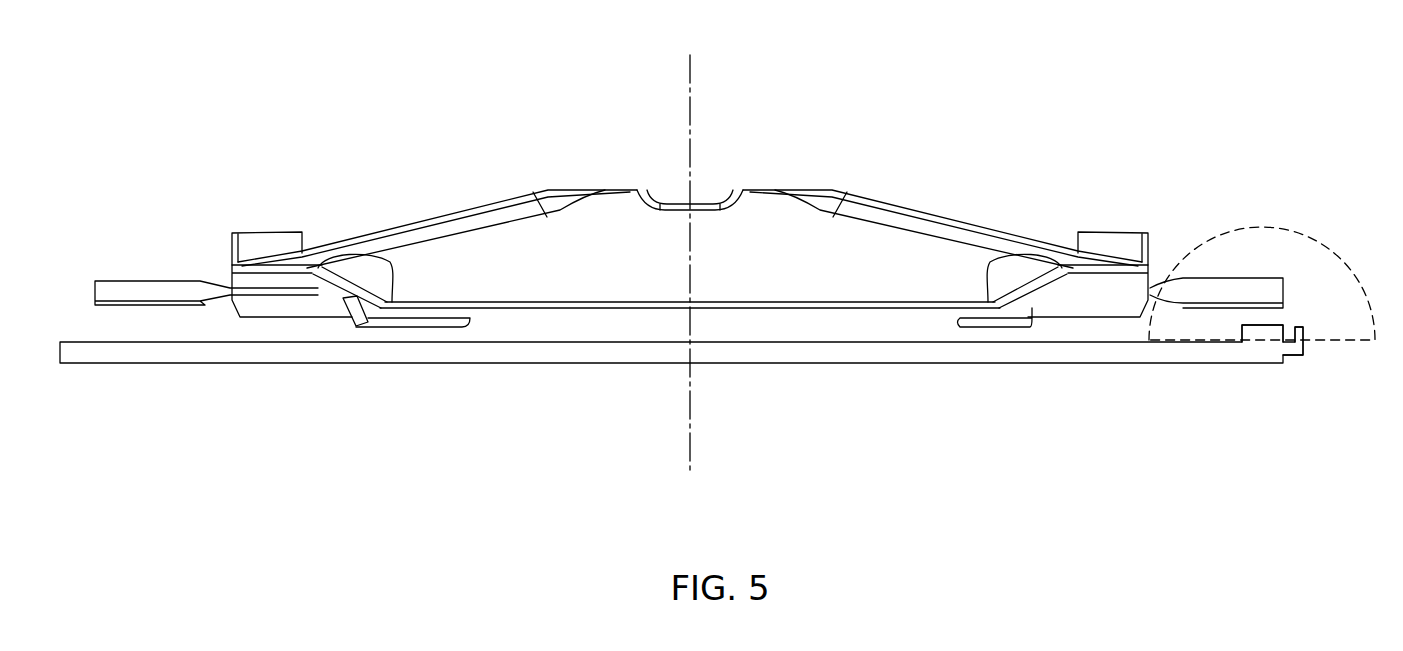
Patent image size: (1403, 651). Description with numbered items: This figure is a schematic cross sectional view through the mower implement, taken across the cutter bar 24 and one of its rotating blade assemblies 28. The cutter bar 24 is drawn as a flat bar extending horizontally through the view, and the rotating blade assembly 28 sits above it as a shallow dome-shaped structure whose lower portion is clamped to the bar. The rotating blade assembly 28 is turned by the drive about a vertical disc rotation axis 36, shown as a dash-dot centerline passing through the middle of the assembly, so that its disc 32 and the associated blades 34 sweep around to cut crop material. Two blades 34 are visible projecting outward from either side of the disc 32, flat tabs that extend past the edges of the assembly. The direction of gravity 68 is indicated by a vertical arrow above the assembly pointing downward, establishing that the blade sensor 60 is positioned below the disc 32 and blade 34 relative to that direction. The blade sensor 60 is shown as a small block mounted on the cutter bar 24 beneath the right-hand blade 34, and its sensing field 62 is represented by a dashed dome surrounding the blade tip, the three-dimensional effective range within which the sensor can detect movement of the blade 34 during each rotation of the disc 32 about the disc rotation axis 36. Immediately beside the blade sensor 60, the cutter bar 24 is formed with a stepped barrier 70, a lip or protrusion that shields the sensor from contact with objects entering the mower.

The cutter bar 24 is at (880, 347).
The rotating blade assembly 28 is at (870, 186).
The disc 32 is at (905, 262).
The blade 34 is at (140, 285).
The disc rotation axis 36 is at (690, 118).
The blade sensor 60 is at (1258, 334).
The sensing field 62 is at (1298, 226).
The direction of gravity 68 is at (467, 110).
The barrier 70 is at (1301, 332).